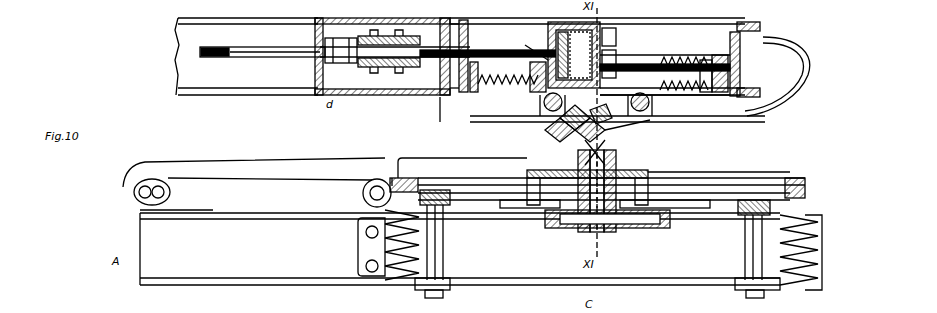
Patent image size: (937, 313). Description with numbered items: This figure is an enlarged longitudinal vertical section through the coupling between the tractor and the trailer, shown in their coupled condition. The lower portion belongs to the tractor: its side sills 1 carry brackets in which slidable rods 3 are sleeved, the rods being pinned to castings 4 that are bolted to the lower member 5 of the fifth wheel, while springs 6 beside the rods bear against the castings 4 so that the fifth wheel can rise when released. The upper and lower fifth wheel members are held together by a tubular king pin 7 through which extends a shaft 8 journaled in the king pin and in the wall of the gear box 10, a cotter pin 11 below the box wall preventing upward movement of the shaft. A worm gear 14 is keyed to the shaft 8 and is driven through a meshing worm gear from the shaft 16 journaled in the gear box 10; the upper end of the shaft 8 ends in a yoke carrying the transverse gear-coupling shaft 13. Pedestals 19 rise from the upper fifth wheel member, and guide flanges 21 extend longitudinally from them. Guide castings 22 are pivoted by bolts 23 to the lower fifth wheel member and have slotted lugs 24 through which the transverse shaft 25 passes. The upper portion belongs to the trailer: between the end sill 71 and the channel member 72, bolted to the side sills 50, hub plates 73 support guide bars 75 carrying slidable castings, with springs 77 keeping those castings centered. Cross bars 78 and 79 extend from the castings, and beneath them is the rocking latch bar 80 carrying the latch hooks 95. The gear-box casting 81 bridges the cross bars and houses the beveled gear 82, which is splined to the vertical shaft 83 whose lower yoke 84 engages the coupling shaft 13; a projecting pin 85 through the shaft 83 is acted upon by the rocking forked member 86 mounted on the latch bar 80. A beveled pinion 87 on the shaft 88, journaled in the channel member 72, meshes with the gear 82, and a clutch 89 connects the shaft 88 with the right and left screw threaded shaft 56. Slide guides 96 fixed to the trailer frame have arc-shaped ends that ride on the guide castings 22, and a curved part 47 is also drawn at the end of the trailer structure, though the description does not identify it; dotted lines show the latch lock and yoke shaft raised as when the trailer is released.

The side sills 1 is at (526, 280).
The slidable rods 3 is at (443, 246).
The castings 4 is at (452, 190).
The lower member of the fifth wheel 5 is at (473, 194).
The springs 6 is at (385, 240).
The tubular king pin 7 is at (615, 150).
The shaft 8 is at (604, 236).
The gear box 10 is at (665, 228).
The cotter pin 11 is at (590, 236).
The transverse gear-coupling shaft 13 is at (635, 130).
The worm gear 14 is at (552, 228).
The shaft 16 is at (715, 212).
The pedestals 19 is at (620, 170).
The guide flanges 21 is at (462, 160).
The guide castings 22 is at (298, 182).
The bolts 23 is at (363, 198).
The slotted lugs 24 is at (135, 197).
The transverse shaft 25 is at (165, 192).
The curved guard 47 is at (806, 78).
The side sills 50 is at (250, 88).
The right and left screw threaded shaft 56 is at (268, 58).
The end sill 71 is at (740, 68).
The channel member 72 is at (463, 20).
The hub plates 73 is at (476, 92).
The guide bars 75 is at (535, 92).
The springs 77 is at (500, 88).
The cross bar 78 is at (651, 103).
The cross bar 79 is at (560, 122).
The rocking latch bar 80 is at (545, 136).
The gear-box casting 81 is at (549, 37).
The beveled gear 82 is at (616, 72).
The vertical shaft 83 is at (619, 38).
The yoke 84 is at (603, 114).
The projecting pin 85 is at (525, 45).
The rocking forked member 86 is at (564, 130).
The beveled pinion 87 is at (563, 30).
The shaft 88 is at (488, 48).
The clutch 89 is at (338, 40).
The latch hooks 95 is at (670, 124).
The slide guides 96 is at (760, 116).